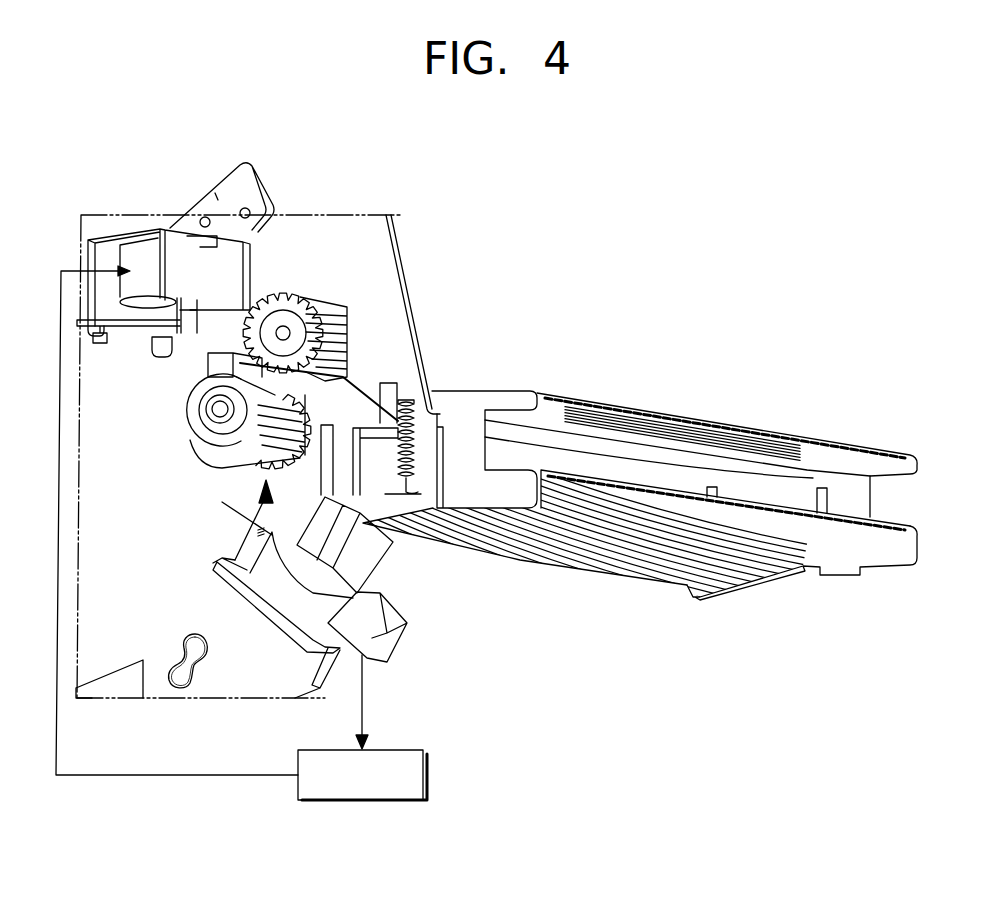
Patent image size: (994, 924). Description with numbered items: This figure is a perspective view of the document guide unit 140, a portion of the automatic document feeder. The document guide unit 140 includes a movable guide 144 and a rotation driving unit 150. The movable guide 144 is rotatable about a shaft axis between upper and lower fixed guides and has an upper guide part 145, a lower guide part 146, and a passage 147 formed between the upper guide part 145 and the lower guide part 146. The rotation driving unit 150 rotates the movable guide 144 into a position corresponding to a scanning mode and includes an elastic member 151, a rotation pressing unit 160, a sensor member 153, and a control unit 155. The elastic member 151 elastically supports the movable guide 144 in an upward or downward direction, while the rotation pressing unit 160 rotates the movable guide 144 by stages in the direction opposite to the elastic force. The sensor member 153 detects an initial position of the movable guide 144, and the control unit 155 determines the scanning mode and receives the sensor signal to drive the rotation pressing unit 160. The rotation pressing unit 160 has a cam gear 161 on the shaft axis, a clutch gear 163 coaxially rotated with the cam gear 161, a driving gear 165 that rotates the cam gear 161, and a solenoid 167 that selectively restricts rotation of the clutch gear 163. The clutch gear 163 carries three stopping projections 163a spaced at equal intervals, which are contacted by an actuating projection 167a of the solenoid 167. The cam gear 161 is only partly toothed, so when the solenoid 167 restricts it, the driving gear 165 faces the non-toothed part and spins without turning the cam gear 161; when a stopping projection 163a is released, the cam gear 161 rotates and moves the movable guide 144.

The document guide unit 140 is at (616, 208).
The movable guide 144 is at (826, 633).
The upper guide part 145 is at (807, 443).
The lower guide part 146 is at (578, 566).
The passage 147 is at (626, 470).
The rotation driving unit 150 is at (492, 570).
The elastic member 151 is at (414, 486).
The sensor member 153 is at (370, 635).
The control unit 155 is at (420, 748).
The rotation pressing unit 160 is at (357, 592).
The cam gear 161 is at (343, 377).
The clutch gear 163 is at (172, 397).
The stopping projections 163a is at (285, 326).
The driving gear 165 is at (345, 301).
The solenoid 167 is at (161, 214).
The actuating projection 167a is at (253, 235).